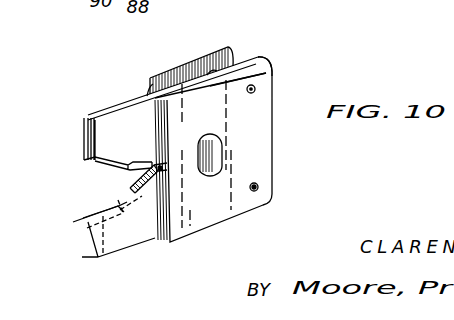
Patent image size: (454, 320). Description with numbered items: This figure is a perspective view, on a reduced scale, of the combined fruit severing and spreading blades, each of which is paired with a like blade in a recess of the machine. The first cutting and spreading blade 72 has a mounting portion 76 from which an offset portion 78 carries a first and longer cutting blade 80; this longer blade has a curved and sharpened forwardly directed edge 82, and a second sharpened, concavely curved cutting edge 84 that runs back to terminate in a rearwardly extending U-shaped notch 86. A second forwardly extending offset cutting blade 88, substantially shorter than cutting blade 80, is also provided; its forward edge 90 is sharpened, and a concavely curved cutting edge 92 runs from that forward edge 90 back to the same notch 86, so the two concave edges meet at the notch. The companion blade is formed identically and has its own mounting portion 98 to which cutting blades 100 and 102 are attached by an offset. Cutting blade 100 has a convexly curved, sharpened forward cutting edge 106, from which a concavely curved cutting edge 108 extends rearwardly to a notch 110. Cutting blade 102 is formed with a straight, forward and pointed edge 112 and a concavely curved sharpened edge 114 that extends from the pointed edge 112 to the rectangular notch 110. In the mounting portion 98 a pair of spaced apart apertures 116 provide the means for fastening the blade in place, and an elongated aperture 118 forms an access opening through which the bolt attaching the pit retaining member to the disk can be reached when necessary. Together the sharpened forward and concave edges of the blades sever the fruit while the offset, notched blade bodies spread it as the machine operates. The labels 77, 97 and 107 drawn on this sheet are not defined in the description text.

The cutting and spreading blade 72 is at (180, 75).
The mounting portion 76 is at (213, 70).
The top edge of plate 77 is at (242, 78).
The offset portion 78 is at (152, 92).
The first cutting blade 80 is at (124, 100).
The forwardly directed edge 82 is at (84, 156).
The second cutting edge 84 is at (100, 162).
The U-shaped notch 86 is at (137, 178).
The second cutting blade 88 is at (128, 238).
The forward edge 90 is at (93, 225).
The concavely curved cutting edge 92 is at (90, 225).
The rail end 97 is at (249, 62).
The mounting portion 98 is at (273, 86).
The cutting blade 100 is at (150, 230).
The cutting blade 102 is at (148, 137).
The forward cutting edge 106 is at (82, 257).
The ridge end 107 is at (152, 85).
The concavely curved cutting edge 108 is at (90, 216).
The notch 110 is at (167, 172).
The pointed edge 112 is at (86, 130).
The concavely curved sharpened edge 114 is at (106, 172).
The mounting apertures 116 is at (258, 187).
The elongated aperture 118 is at (210, 150).